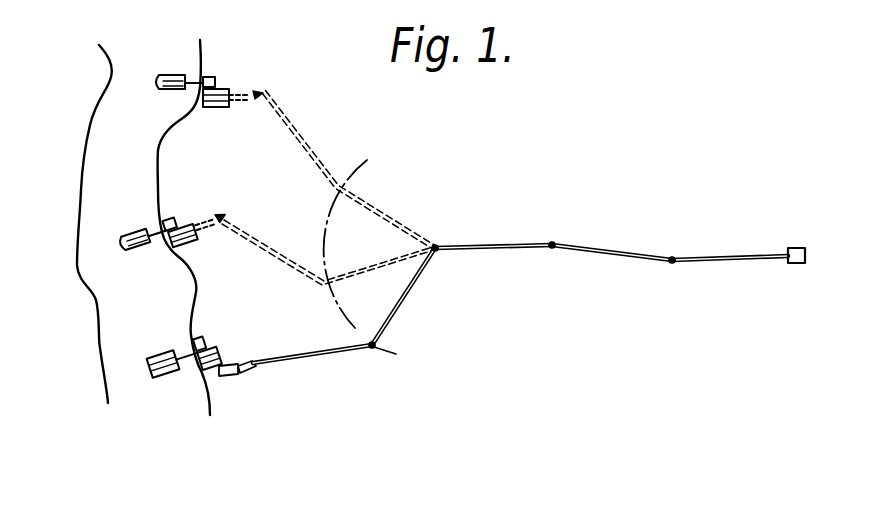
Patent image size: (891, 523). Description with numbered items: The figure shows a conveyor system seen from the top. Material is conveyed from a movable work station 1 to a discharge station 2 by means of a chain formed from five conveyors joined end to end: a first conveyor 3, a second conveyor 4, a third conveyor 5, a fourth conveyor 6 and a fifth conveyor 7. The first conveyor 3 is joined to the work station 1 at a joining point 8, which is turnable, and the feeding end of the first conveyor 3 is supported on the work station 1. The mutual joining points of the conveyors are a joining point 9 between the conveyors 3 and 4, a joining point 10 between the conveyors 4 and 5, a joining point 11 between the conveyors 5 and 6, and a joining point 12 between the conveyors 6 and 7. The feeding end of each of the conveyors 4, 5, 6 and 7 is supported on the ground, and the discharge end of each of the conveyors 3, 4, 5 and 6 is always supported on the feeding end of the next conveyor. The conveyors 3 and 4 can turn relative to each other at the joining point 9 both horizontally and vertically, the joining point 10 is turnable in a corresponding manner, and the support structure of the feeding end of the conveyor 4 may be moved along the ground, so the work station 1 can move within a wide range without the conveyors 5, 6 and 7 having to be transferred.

The work station 1 is at (203, 388).
The discharge station 2 is at (801, 264).
The first conveyor 3 is at (308, 358).
The second conveyor 4 is at (408, 297).
The third conveyor 5 is at (507, 243).
The fourth conveyor 6 is at (618, 252).
The fifth conveyor 7 is at (748, 253).
The joining point between work station and first conveyor 8 is at (246, 358).
The joining point of conveyors 3 and 4 9 is at (375, 350).
The joining point of conveyors 4 and 5 10 is at (437, 252).
The joining point of conveyors 5 and 6 11 is at (552, 249).
The joining point of conveyors 6 and 7 12 is at (672, 264).